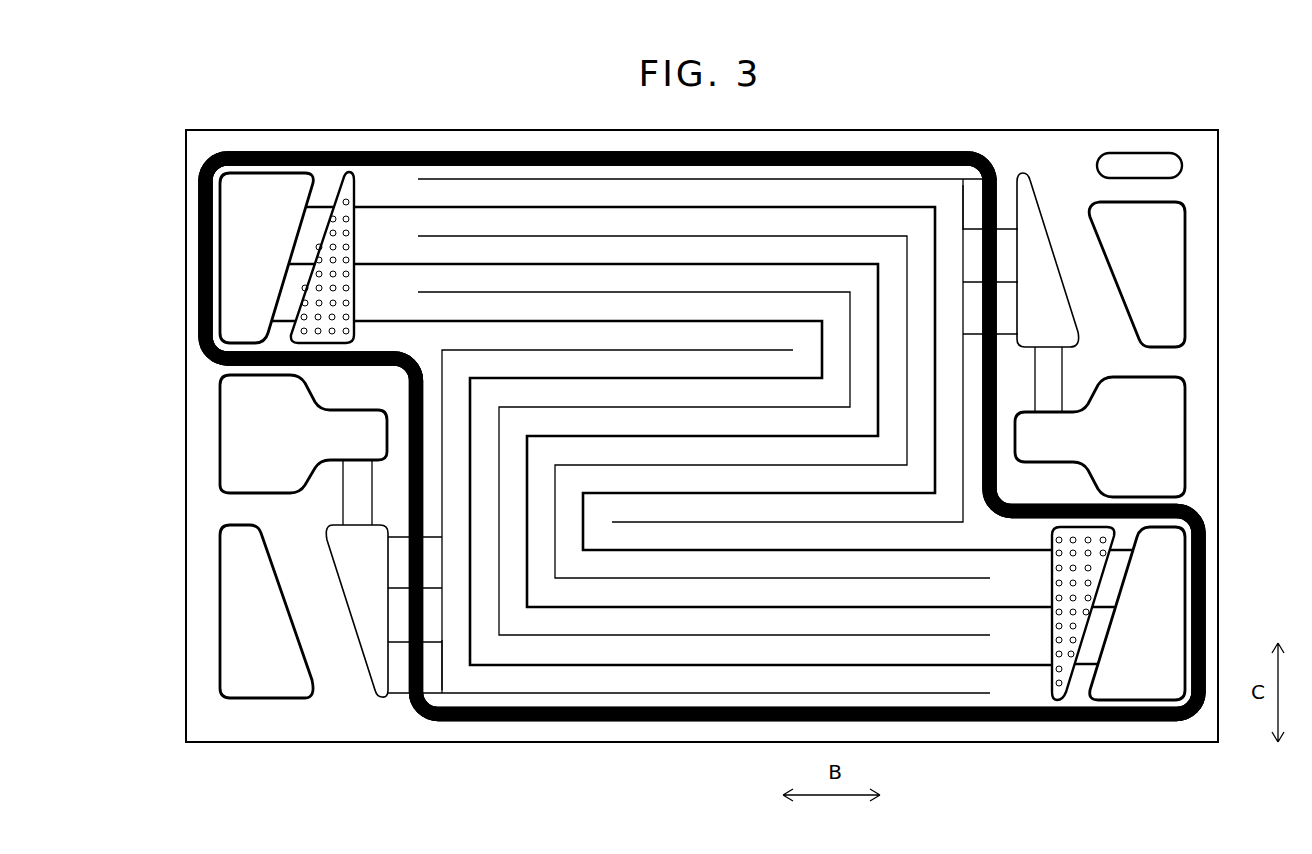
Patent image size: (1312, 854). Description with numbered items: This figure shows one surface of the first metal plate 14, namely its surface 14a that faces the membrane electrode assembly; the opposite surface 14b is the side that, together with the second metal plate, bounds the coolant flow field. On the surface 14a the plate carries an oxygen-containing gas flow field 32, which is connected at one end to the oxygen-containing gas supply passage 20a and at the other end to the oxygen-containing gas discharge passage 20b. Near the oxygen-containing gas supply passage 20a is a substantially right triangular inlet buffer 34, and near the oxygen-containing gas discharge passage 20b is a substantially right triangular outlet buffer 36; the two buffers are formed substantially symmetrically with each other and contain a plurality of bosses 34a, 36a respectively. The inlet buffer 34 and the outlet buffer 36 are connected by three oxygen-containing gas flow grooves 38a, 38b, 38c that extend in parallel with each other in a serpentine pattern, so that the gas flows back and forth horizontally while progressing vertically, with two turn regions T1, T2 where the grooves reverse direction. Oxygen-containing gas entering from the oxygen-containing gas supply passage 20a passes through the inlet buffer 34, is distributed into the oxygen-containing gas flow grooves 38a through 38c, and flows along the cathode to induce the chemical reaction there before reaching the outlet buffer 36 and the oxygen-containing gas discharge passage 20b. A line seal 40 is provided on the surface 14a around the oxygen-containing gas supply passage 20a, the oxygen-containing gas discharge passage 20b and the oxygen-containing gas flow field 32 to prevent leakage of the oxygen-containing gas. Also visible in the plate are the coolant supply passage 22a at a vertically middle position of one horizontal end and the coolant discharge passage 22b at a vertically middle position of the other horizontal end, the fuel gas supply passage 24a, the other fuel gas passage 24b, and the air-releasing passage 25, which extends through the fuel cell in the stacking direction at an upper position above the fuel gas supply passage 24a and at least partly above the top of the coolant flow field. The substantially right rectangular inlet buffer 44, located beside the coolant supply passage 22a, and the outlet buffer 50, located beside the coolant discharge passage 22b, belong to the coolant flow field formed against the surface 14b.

The first metal plate 14 is at (412, 60).
The surface of first metal plate 14a is at (1003, 726).
The surface of first metal plate 14b is at (1072, 726).
The oxygen-containing gas supply passage 20a is at (266, 258).
The oxygen-containing gas discharge passage 20b is at (1137, 613).
The coolant supply passage 22a is at (303, 450).
The coolant discharge passage 22b is at (1100, 422).
The fuel gas supply passage 24a is at (1137, 274).
The second mounting land 24b is at (266, 611).
The air-releasing passage 25 is at (1143, 160).
The oxygen-containing gas flow field 32 is at (702, 392).
The inlet buffer 34 is at (350, 256).
The bosses 34a is at (354, 250).
The outlet buffer 36 is at (1053, 614).
The bosses 36a is at (1052, 596).
The oxygen-containing gas flow groove 38a is at (560, 208).
The oxygen-containing gas flow groove 38b is at (560, 265).
The oxygen-containing gas flow groove 38c is at (560, 322).
The line seal 40 is at (394, 366).
The inlet buffer 44 is at (357, 611).
The outlet buffer 50 is at (1048, 260).
The turn region T1 is at (967, 210).
The turn region T2 is at (438, 664).